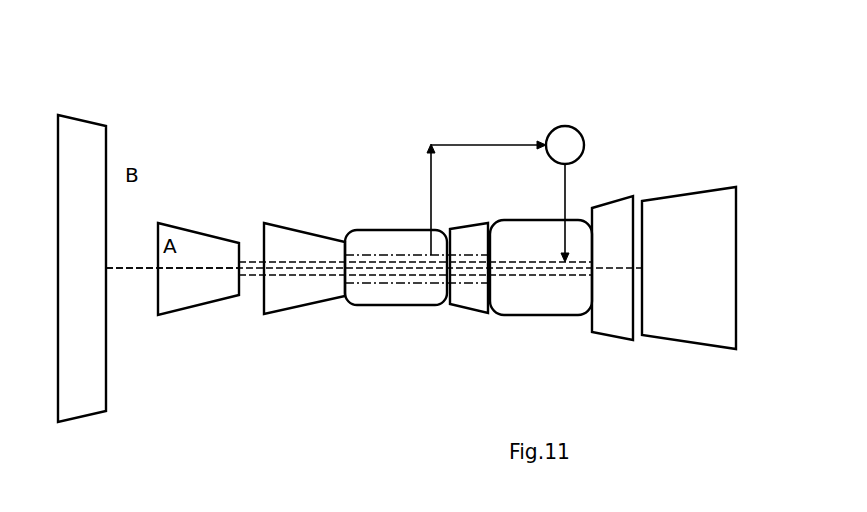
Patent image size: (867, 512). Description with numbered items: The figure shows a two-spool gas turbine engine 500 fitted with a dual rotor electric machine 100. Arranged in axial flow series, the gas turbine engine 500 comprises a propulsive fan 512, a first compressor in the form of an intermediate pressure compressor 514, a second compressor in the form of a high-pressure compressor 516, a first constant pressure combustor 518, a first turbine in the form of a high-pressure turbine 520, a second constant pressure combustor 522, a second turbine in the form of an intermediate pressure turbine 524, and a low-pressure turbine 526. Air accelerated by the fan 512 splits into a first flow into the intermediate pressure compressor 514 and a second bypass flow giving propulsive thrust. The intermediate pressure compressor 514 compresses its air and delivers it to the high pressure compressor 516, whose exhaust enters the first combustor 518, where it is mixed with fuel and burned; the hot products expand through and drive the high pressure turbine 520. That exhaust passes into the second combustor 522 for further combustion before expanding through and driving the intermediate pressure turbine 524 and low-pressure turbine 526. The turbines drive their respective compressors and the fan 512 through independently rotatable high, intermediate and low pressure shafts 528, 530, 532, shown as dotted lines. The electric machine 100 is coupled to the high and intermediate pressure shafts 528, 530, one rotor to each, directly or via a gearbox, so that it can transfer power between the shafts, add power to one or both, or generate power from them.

The gas turbine engine 500 is at (188, 56).
The propulsive fan 512 is at (85, 120).
The intermediate pressure compressor 514 is at (175, 226).
The high-pressure compressor 516 is at (292, 227).
The first constant pressure combustor 518 is at (393, 230).
The high-pressure turbine 520 is at (466, 228).
The second constant pressure combustor 522 is at (537, 220).
The intermediate pressure turbine 524 is at (612, 203).
The low-pressure turbine 526 is at (695, 194).
The high pressure shaft 528 is at (393, 283).
The intermediate pressure shaft 530 is at (297, 277).
The low pressure shaft 532 is at (192, 270).
The dual rotor electric machine 100 is at (583, 131).